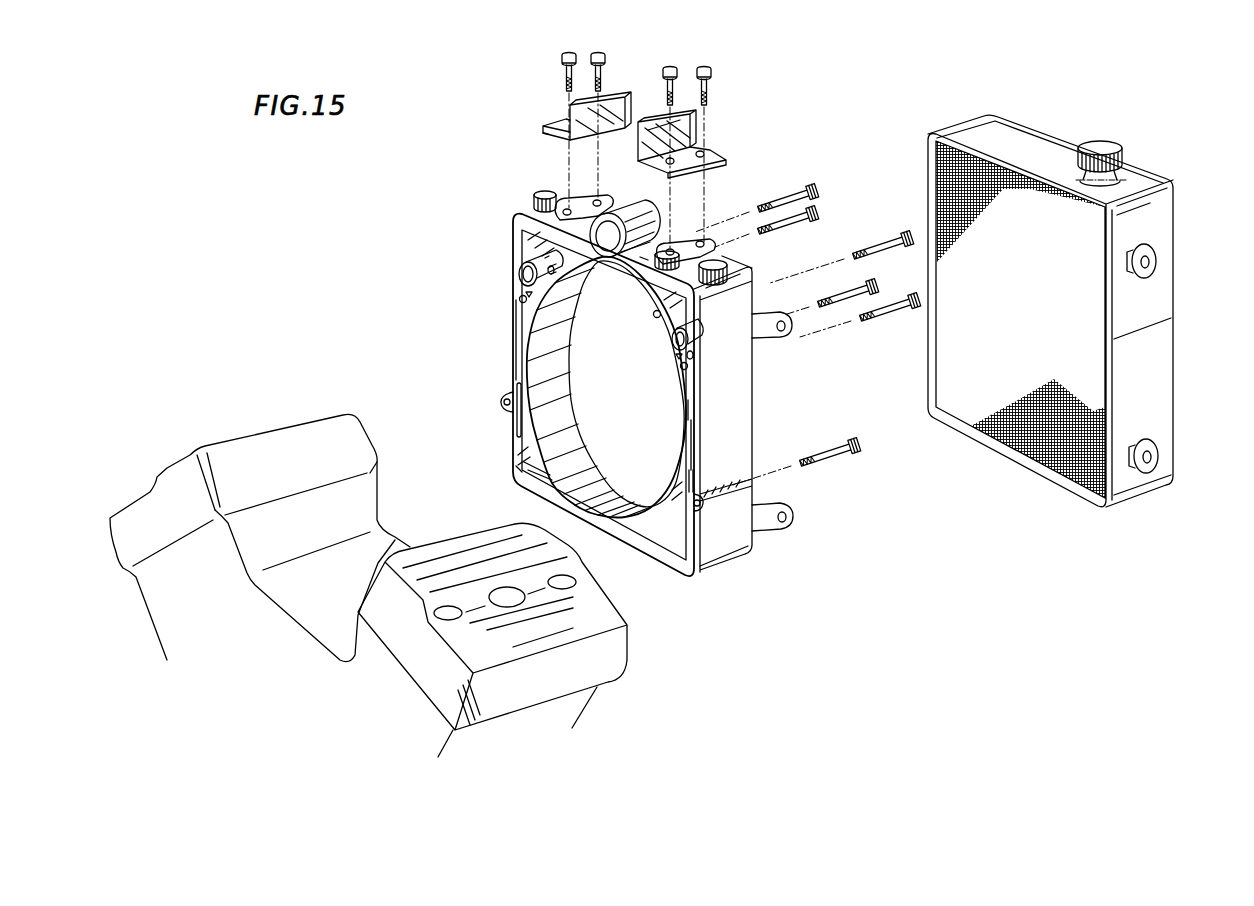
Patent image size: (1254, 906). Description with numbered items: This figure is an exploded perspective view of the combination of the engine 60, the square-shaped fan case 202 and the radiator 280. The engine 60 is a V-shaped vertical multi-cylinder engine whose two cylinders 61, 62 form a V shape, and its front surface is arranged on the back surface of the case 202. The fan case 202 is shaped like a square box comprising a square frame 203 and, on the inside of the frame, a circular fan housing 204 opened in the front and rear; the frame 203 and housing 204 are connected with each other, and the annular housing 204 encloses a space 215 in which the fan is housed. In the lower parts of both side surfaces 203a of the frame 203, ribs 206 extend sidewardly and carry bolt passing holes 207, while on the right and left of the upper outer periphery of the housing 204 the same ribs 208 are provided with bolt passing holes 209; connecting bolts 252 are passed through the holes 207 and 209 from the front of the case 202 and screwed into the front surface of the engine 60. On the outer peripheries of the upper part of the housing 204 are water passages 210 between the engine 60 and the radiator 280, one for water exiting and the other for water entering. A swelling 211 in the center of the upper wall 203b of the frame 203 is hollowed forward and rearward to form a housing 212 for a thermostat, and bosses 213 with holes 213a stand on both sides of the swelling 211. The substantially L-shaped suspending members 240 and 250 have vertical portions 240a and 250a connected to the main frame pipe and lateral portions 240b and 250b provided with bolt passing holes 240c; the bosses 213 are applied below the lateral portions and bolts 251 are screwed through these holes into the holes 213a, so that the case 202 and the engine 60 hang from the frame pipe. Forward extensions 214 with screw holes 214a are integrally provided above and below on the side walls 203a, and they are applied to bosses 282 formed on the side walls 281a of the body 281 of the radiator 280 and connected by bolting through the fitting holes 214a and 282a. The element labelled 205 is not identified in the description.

The engine 60 is at (424, 713).
The cylinder 61 is at (290, 440).
The cylinder 62 is at (588, 662).
The fan case 202 is at (510, 359).
The square frame 203 is at (730, 433).
The side surface 203a is at (512, 456).
The upper wall 203b is at (710, 290).
The fan housing 204 is at (688, 410).
The rim 205 is at (512, 327).
The rib 206 is at (519, 383).
The bolt passing hole 207 is at (501, 404).
The rib 208 is at (525, 266).
The bolt passing hole 209 is at (517, 265).
The water passage 210 is at (548, 271).
The swelling 211 is at (645, 252).
The thermostat housing 212 is at (610, 216).
The boss 213 is at (562, 208).
The hole 213a is at (596, 200).
The forward extension 214 is at (780, 313).
The screw hole 214a is at (786, 332).
The space 215 is at (604, 428).
The suspending member 240 is at (688, 131).
The vertical portion 240a is at (690, 140).
The lateral portion 240b is at (680, 170).
The bolt passing hole 240c is at (690, 160).
The suspending member 250 is at (603, 112).
The vertical portion 250a is at (557, 124).
The lateral portion 250b is at (560, 121).
The bolt 251 is at (600, 48).
The connecting bolt 252 is at (818, 215).
The radiator 280 is at (994, 386).
The radiator body 281 is at (1129, 311).
The side wall 281a is at (1150, 382).
The boss 282 is at (1132, 258).
The fitting hole 282a is at (1139, 268).